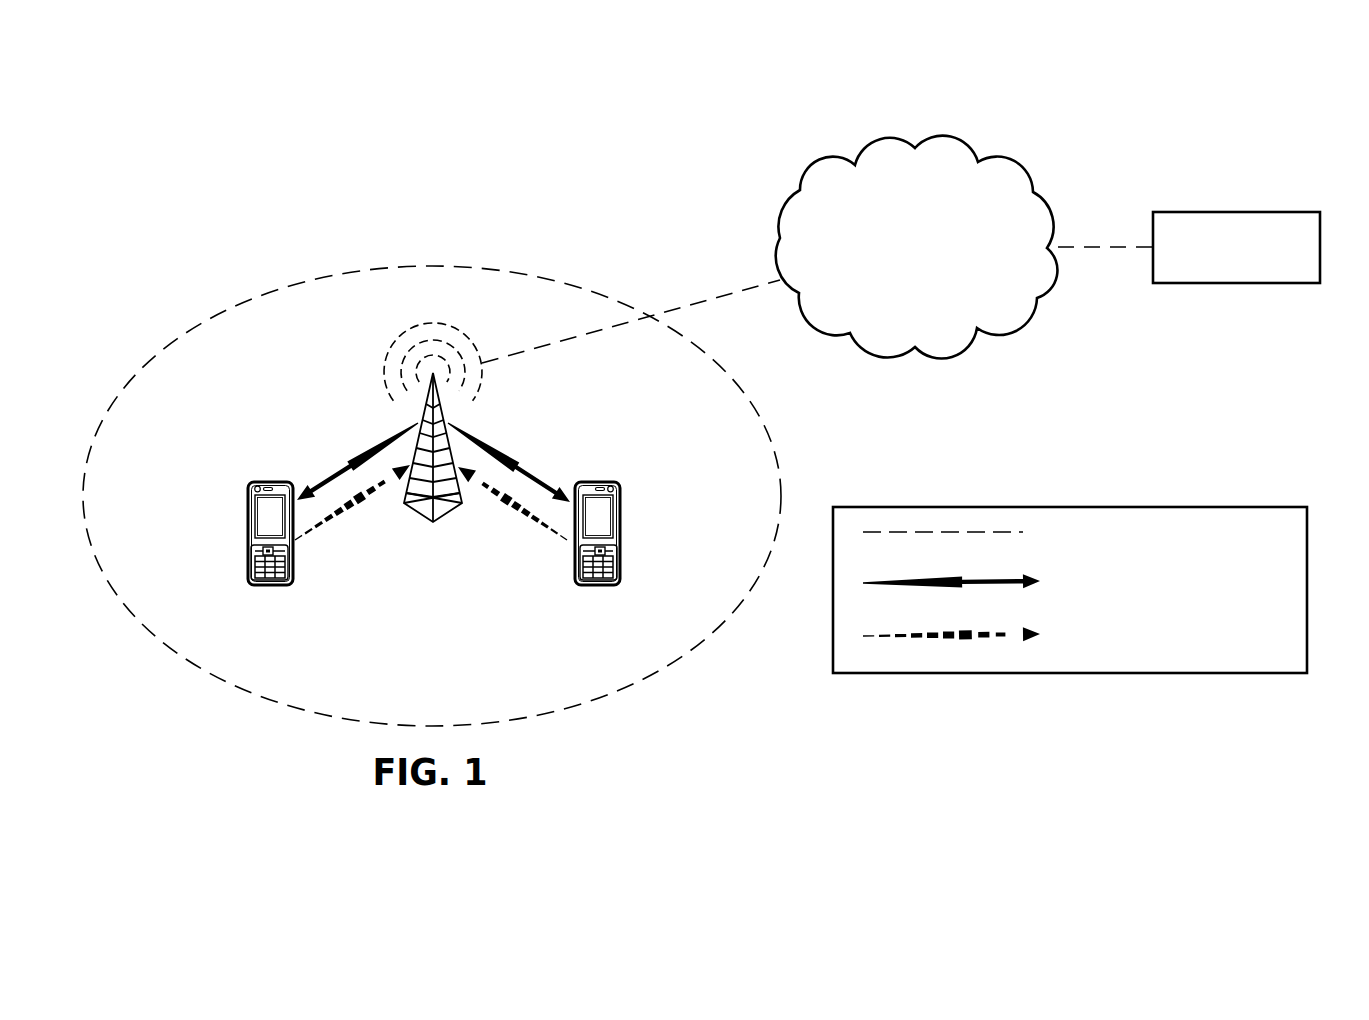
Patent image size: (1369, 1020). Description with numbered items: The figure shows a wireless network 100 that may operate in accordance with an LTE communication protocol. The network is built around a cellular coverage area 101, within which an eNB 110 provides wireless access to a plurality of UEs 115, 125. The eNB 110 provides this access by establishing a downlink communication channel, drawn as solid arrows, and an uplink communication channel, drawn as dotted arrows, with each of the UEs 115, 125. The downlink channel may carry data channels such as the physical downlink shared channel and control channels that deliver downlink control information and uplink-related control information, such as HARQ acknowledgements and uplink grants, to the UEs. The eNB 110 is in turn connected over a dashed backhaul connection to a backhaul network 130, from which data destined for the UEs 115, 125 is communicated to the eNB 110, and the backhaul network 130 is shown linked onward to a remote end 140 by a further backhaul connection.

The wireless network 100 is at (532, 171).
The cellular coverage area 101 is at (353, 272).
The eNB 110 is at (417, 516).
The UE 115 is at (248, 533).
The UE 125 is at (620, 533).
The backhaul network 130 is at (915, 139).
The remote end 140 is at (1237, 212).